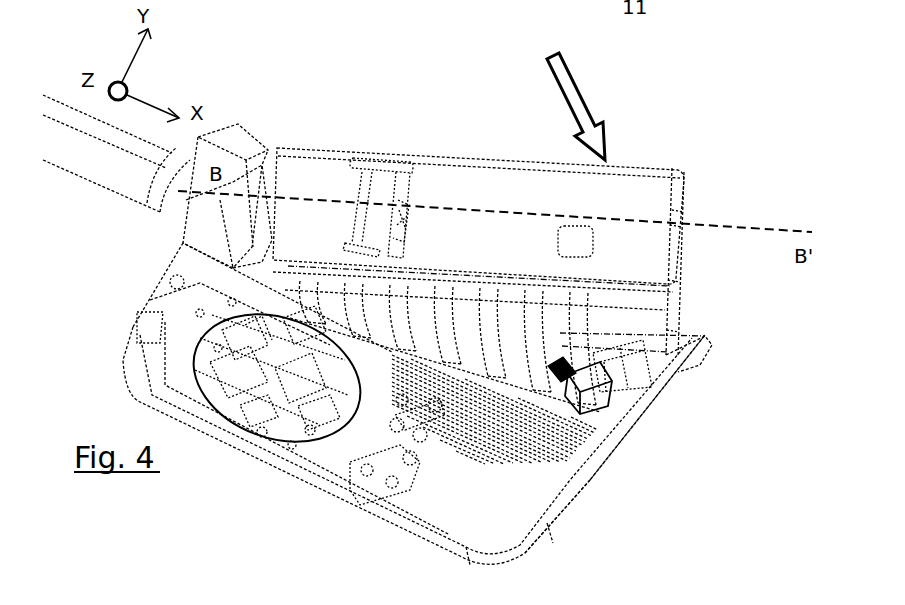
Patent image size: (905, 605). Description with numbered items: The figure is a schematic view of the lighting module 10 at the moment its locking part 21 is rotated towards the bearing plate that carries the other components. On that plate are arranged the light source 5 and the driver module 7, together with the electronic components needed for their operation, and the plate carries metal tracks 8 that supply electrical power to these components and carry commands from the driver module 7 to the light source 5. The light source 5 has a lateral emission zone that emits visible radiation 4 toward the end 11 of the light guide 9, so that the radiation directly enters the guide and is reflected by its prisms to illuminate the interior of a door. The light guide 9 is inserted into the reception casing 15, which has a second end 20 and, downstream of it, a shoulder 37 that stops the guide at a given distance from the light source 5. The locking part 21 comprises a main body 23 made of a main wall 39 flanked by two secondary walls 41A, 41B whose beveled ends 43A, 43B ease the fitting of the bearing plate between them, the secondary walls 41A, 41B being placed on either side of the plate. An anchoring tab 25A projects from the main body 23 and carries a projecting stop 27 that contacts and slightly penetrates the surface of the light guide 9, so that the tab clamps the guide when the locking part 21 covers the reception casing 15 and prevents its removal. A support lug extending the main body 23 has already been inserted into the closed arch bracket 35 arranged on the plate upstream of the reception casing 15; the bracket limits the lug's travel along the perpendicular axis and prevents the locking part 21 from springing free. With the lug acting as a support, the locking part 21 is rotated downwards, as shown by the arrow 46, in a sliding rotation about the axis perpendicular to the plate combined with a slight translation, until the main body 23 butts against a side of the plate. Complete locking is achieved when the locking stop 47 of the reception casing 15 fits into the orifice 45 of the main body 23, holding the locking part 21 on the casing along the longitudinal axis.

The visible radiation 4 is at (560, 372).
The light source 5 is at (556, 378).
The driver module 7 is at (217, 402).
The metal tracks 8 is at (570, 460).
The light guide 9 is at (105, 152).
The lighting module 10 is at (242, 99).
The end of the light guide 11 is at (540, 368).
The reception casing 15 is at (417, 330).
The second end of the reception casing 20 is at (563, 323).
The locking part 21 is at (822, 173).
The main body 23 is at (735, 121).
The anchoring tab 25A is at (383, 192).
The projecting stop 27 is at (393, 200).
The arch bracket 35 is at (213, 215).
The shoulder 37 is at (590, 350).
The main wall 39 is at (688, 213).
The secondary wall 41A is at (683, 210).
The secondary wall 41B is at (678, 278).
The beveled end 43A is at (447, 275).
The beveled end 43B is at (662, 348).
The orifice 45 is at (582, 242).
The arrow 46 is at (598, 90).
The locking stop 47 is at (512, 362).